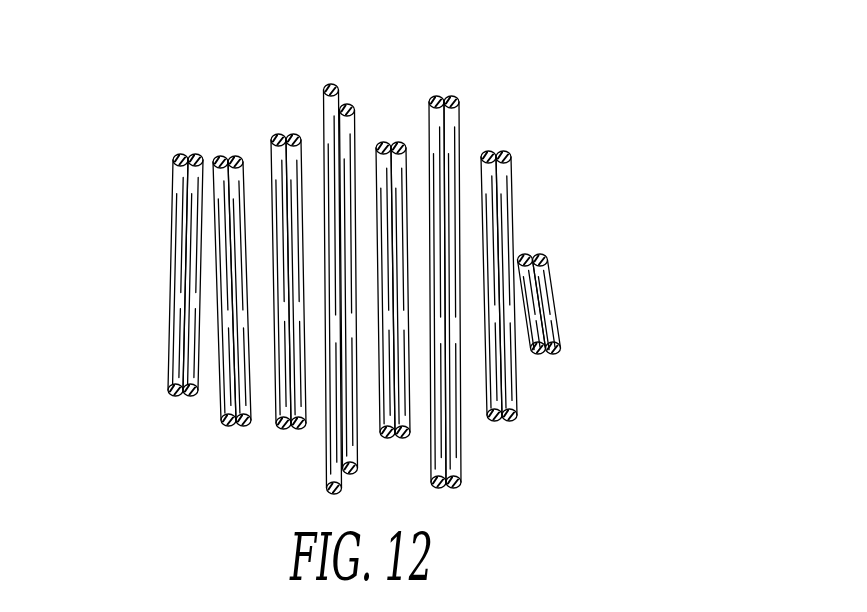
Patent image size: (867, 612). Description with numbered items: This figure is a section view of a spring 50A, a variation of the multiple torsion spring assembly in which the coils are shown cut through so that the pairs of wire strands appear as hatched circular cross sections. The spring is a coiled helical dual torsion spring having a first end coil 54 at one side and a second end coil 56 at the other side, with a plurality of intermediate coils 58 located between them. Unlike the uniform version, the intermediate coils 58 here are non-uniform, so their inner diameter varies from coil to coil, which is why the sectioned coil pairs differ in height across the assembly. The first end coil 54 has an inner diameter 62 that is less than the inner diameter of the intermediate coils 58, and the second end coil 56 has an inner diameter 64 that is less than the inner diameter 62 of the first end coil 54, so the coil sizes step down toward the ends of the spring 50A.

The spring 50A is at (436, 250).
The first end coil 54 is at (148, 280).
The second end coil 56 is at (557, 334).
The intermediate coils 58 is at (402, 74).
The inner diameter of first end coil 62 is at (150, 246).
The inner diameter of second end coil 64 is at (573, 286).